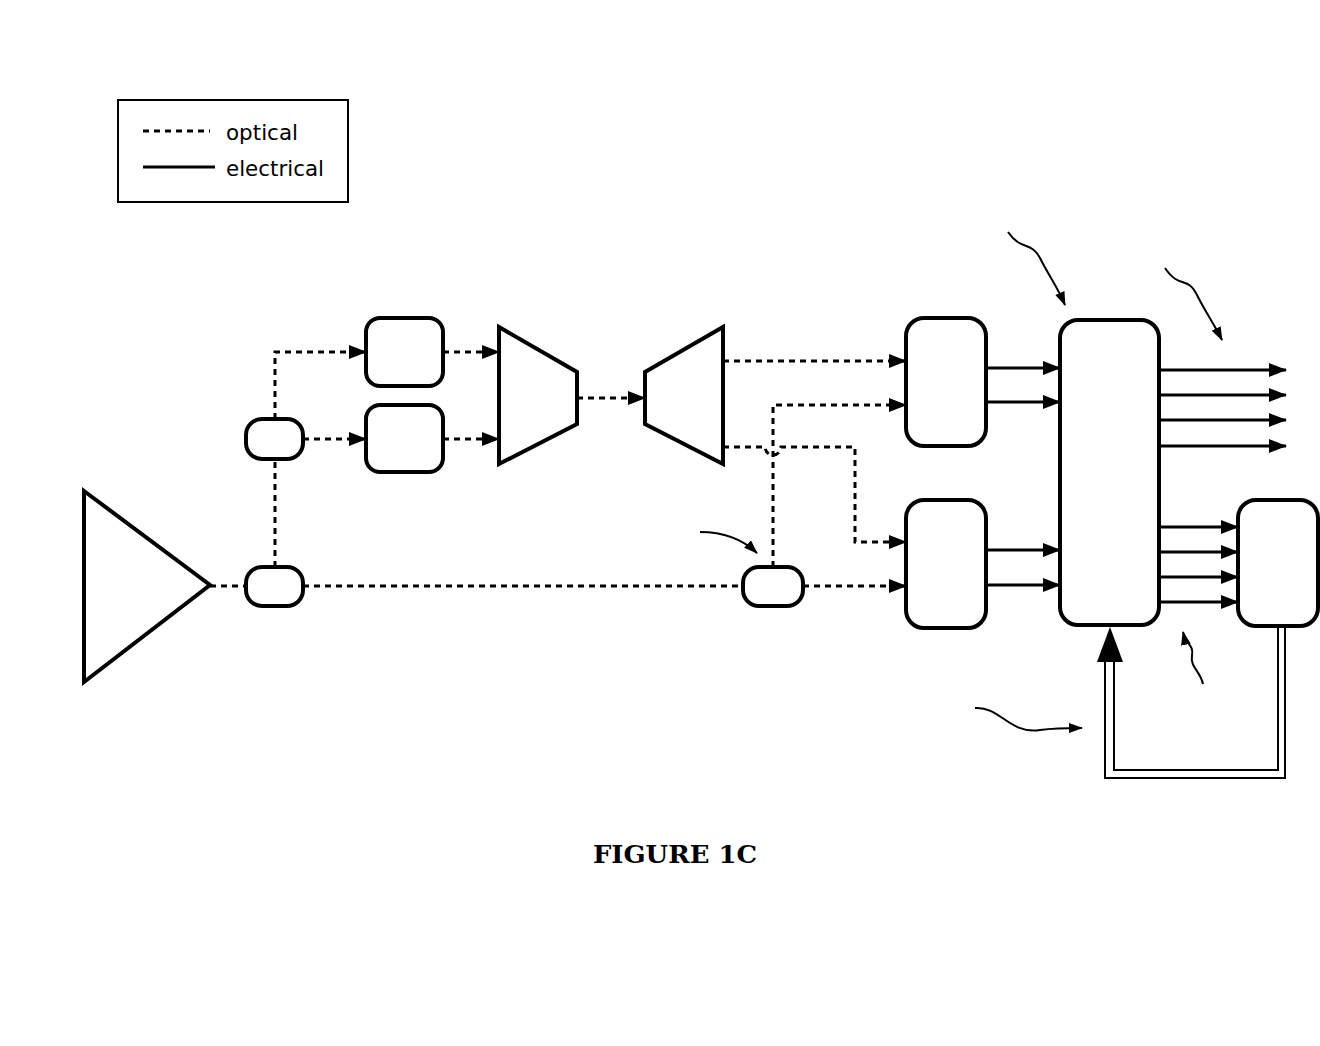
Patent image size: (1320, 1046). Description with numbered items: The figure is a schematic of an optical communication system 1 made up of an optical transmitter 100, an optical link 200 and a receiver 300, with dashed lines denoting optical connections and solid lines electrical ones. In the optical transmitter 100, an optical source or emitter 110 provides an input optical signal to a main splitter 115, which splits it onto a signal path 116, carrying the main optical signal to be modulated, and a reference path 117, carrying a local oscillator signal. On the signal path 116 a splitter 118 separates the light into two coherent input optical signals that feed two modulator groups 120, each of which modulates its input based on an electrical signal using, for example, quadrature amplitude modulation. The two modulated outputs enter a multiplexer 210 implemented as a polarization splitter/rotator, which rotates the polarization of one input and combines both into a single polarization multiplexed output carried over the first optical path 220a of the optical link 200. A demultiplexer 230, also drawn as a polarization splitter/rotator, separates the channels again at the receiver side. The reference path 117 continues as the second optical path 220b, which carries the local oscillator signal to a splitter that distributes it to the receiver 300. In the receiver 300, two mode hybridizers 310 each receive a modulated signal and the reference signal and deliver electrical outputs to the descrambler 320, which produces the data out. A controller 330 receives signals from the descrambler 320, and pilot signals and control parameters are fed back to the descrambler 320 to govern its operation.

The optical communication system 1 is at (1097, 88).
The optical transmitter 100 is at (253, 282).
The optical source (emitter) 110 is at (268, 650).
The main splitter 115 is at (305, 553).
The signal path 116 is at (263, 532).
The reference path 117 is at (407, 578).
The splitter 118 is at (258, 398).
The modulator group 120 is at (432, 395).
The optical link 200 is at (525, 265).
The multiplexer 210 is at (538, 395).
The first optical path 220a is at (600, 383).
The second optical path 220b is at (535, 608).
The demultiplexer 230 is at (775, 434).
The receiver 300 is at (920, 245).
The mode hybridizer 310 is at (983, 473).
The descrambler 320 is at (1173, 472).
The controller 330 is at (1207, 639).